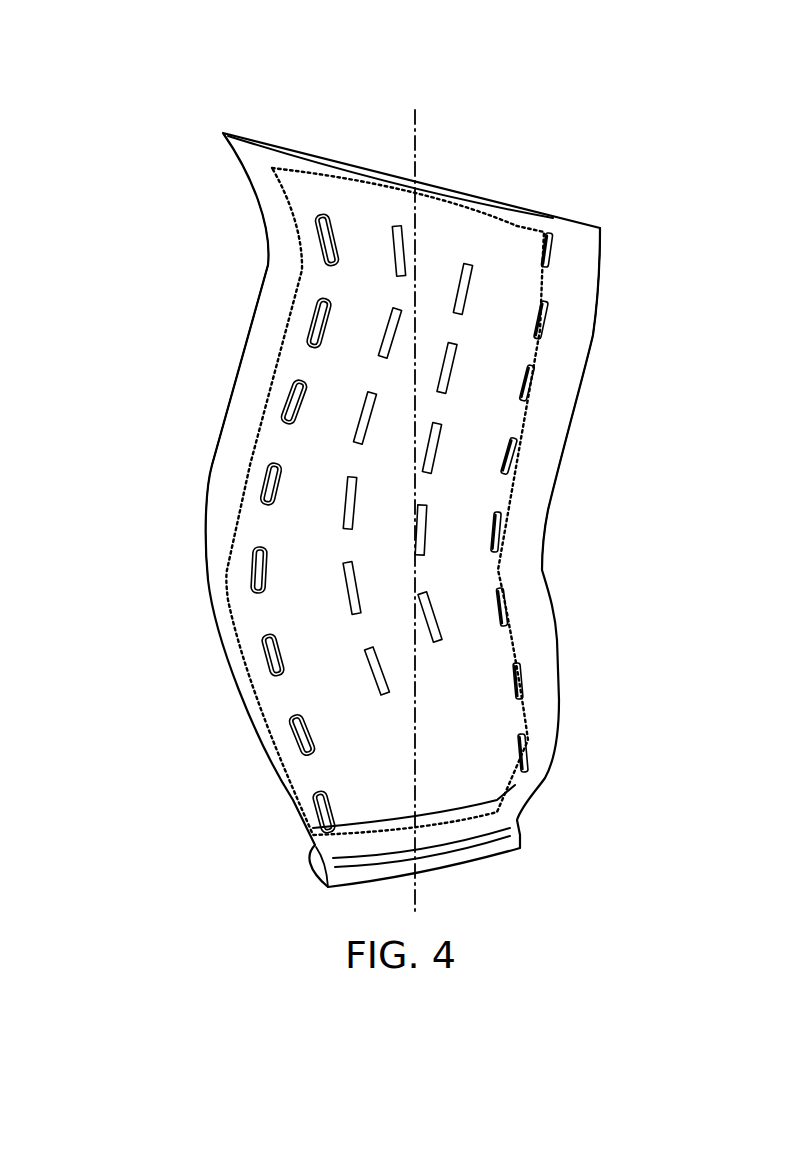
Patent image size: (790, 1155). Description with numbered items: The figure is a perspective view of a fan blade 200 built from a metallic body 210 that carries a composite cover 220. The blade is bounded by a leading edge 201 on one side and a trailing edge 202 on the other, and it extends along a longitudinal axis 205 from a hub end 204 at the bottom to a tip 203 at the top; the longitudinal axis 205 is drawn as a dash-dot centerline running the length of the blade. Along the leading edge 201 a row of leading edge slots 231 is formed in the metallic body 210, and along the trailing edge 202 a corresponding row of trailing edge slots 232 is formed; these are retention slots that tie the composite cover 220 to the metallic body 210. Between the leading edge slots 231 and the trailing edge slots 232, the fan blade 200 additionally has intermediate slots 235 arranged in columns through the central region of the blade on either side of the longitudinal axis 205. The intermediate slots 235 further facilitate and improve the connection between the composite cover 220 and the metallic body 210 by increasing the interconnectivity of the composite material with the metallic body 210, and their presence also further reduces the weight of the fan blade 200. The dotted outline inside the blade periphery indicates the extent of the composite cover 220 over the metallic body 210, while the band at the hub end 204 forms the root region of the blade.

The fan blade 200 is at (154, 57).
The leading edge 201 is at (240, 362).
The trailing edge 202 is at (548, 503).
The tip 203 is at (311, 160).
The hub end 204 is at (437, 857).
The longitudinal axis 205 is at (422, 150).
The metallic body 210 is at (280, 272).
The composite cover 220 is at (517, 225).
The leading edge slots 231 is at (303, 408).
The trailing edge slots 232 is at (497, 535).
The intermediate slots 235 is at (387, 327).